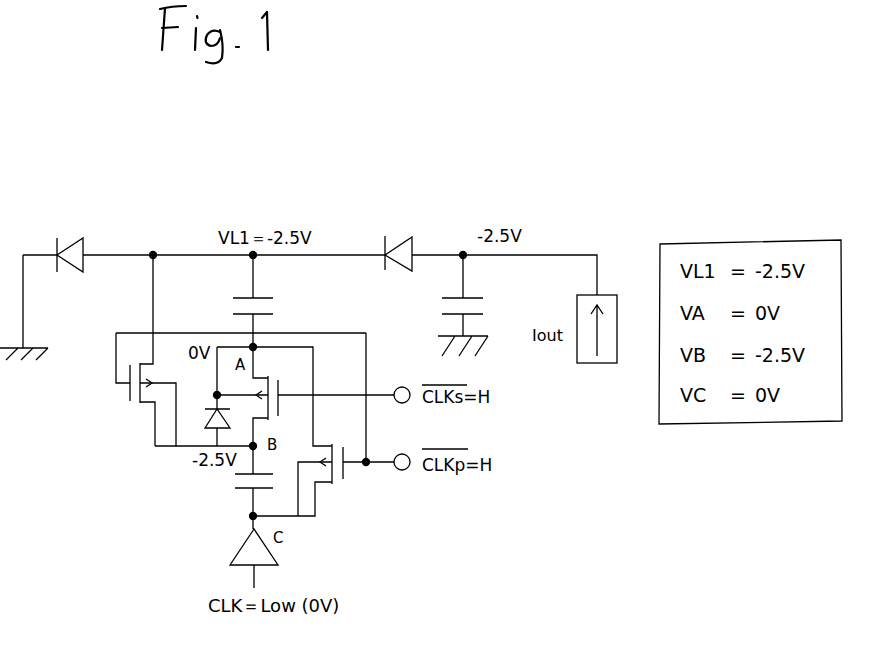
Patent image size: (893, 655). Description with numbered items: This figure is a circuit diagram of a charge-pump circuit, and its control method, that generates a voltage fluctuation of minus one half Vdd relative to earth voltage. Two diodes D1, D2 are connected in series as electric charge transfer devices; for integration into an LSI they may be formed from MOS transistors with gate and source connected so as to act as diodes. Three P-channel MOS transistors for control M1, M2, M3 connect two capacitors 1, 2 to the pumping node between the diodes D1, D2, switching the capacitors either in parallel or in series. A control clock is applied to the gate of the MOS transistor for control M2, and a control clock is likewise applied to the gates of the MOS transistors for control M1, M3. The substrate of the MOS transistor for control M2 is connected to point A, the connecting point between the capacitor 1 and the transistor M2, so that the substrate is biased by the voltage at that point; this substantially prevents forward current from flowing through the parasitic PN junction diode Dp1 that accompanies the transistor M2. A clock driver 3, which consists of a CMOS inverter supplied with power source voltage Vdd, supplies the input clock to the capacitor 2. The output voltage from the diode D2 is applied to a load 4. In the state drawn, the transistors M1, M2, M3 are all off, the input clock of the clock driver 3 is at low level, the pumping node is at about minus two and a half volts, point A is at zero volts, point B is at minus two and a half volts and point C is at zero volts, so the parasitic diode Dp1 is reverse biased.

The capacitor 1 is at (280, 308).
The capacitor 2 is at (233, 483).
The clock driver 3 is at (232, 552).
The load 4 is at (590, 366).
The diode D1 is at (82, 230).
The diode D2 is at (403, 228).
The parasitic PN junction diode Dp1 is at (203, 435).
The MOS transistor for control M1 is at (147, 350).
The MOS transistor for control M2 is at (305, 396).
The MOS transistor for control M3 is at (323, 480).